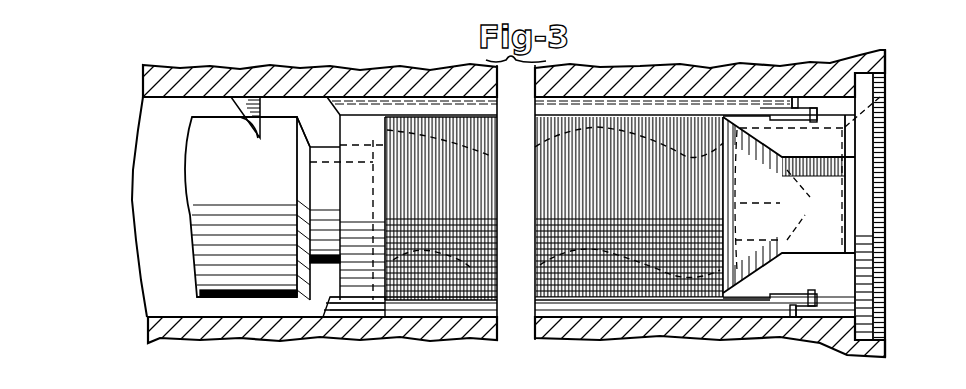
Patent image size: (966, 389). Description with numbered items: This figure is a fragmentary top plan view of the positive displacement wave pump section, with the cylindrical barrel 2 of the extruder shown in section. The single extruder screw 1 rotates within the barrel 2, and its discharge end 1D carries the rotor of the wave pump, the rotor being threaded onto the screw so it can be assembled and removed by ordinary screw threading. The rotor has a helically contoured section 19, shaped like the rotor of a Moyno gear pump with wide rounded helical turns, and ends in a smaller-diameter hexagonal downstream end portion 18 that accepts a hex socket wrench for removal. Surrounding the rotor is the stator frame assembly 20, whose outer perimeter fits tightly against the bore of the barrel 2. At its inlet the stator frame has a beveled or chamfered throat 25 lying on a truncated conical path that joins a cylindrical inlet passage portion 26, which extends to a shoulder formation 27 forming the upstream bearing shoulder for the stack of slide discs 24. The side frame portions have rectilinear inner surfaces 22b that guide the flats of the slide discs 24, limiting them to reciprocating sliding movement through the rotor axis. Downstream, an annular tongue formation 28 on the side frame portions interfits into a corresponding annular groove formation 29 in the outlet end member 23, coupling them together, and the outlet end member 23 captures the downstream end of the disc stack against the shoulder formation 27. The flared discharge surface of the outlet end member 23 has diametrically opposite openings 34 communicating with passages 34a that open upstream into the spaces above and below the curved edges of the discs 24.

The extruder screw 1 is at (186, 178).
The discharge end 1D is at (306, 118).
The cylindrical barrel 2 is at (207, 80).
The downstream end portion 18 is at (800, 200).
The helically contoured section 19 is at (477, 272).
The stator frame assembly 20 is at (388, 100).
The rectilinear inner surface 22b is at (608, 116).
The outlet end member 23 is at (830, 105).
The stack of slide discs 24 is at (695, 118).
The beveled throat 25 is at (362, 108).
The cylindrical inlet passage portion 26 is at (373, 128).
The shoulder formation 27 is at (382, 275).
The annular tongue formation 28 is at (790, 305).
The annular groove formation 29 is at (813, 306).
The openings 34 is at (848, 207).
The passages 34a is at (825, 180).